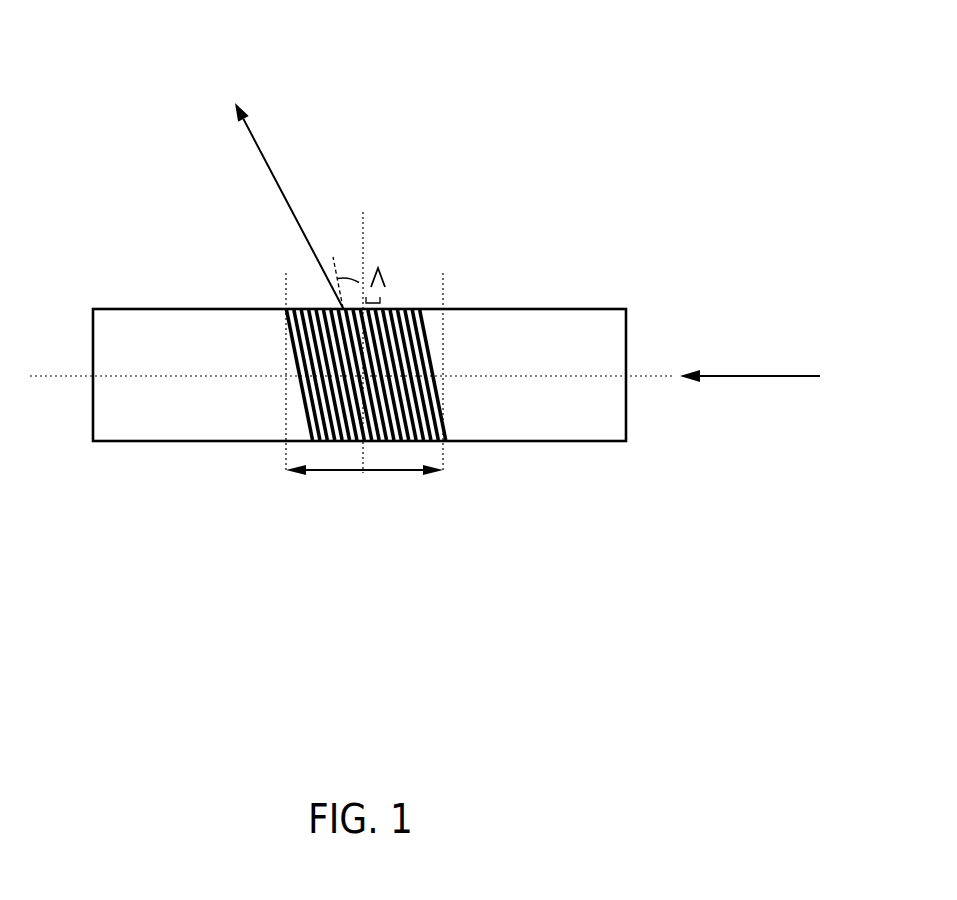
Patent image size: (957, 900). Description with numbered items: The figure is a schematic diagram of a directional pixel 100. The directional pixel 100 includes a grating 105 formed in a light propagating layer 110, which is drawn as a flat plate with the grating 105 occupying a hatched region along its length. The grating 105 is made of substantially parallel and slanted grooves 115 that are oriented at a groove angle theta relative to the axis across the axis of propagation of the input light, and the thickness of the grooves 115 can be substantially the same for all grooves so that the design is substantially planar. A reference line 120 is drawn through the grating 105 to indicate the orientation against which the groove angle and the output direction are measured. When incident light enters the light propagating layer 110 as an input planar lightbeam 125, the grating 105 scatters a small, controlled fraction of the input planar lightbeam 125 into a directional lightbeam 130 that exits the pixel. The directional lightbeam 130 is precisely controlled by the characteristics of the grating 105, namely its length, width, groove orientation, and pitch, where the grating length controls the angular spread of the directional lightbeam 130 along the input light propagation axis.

The directional pixel 100 is at (338, 68).
The grating 105 is at (313, 308).
The light propagating layer 110 is at (140, 309).
The slanted grooves 115 is at (400, 342).
The surface normal of light guide 120 is at (363, 250).
The input planar lightbeam 125 is at (717, 377).
The directional lightbeam 130 is at (266, 163).